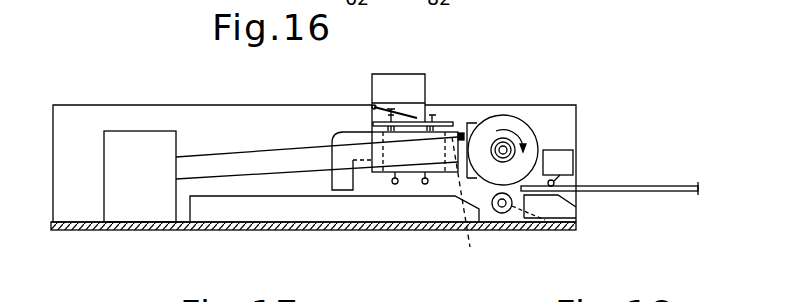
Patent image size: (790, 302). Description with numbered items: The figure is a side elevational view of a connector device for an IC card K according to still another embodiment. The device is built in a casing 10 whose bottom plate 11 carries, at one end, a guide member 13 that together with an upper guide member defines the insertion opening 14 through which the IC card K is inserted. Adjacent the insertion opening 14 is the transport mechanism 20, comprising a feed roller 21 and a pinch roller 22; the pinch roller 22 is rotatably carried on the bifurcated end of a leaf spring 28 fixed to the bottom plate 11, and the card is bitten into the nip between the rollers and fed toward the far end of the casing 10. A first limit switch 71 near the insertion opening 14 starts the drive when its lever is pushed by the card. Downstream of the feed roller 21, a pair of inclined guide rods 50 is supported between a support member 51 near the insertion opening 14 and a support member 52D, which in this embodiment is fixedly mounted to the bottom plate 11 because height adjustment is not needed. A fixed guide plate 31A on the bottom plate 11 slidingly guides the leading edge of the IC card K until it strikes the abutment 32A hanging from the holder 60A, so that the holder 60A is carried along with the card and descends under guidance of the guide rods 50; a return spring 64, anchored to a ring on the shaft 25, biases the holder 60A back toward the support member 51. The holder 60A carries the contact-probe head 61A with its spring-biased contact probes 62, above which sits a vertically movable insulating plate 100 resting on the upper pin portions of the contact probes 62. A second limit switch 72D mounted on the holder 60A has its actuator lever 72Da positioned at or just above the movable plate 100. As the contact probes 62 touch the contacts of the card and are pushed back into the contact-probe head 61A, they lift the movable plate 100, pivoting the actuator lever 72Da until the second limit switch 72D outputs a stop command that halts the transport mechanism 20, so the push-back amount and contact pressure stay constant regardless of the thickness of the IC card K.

The casing 10 is at (226, 230).
The bottom plate 11 is at (110, 231).
The guide member 13 is at (565, 216).
The insertion opening 14 is at (570, 198).
The transport mechanism 20 is at (535, 126).
The feed roller 21 is at (500, 114).
The pinch roller 22 is at (505, 213).
The shaft 25 is at (510, 146).
The leaf spring 28 is at (528, 231).
The guide plate 31A is at (277, 208).
The abutment 32A is at (353, 191).
The guide rods 50 is at (254, 152).
The support member 51 is at (475, 122).
The support member 52D is at (136, 131).
The holder 60A is at (373, 174).
The contact-probe head 61A is at (474, 204).
The contact probes 62 is at (425, 184).
The return spring 64 is at (462, 135).
The first limit switch 71 is at (573, 162).
The second limit switch 72D is at (417, 75).
The actuator lever 72Da is at (403, 110).
The movable plate 100 is at (371, 106).
The IC card K is at (671, 186).